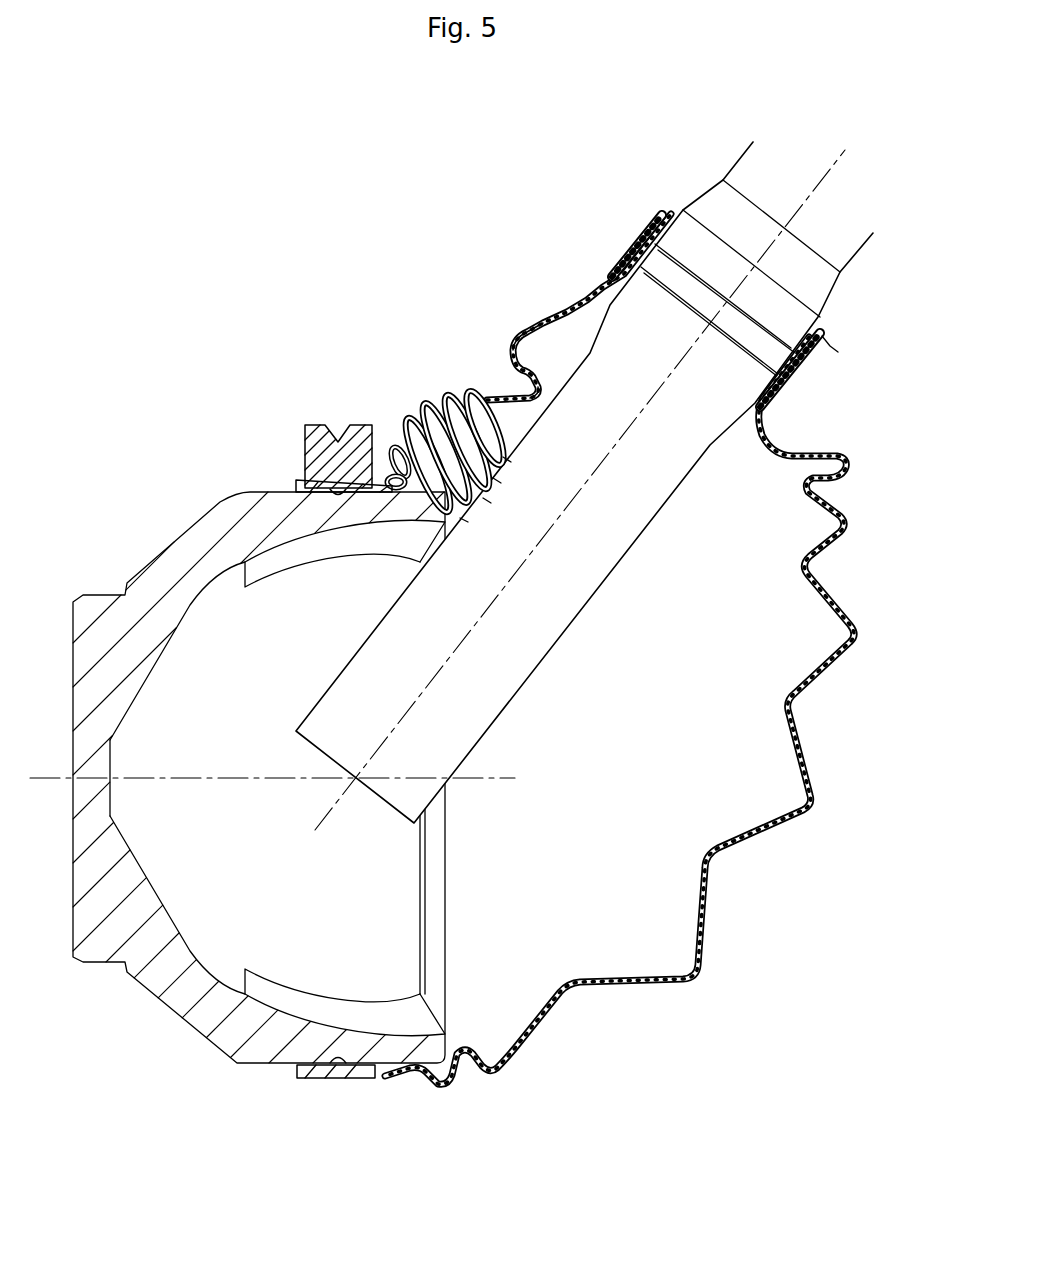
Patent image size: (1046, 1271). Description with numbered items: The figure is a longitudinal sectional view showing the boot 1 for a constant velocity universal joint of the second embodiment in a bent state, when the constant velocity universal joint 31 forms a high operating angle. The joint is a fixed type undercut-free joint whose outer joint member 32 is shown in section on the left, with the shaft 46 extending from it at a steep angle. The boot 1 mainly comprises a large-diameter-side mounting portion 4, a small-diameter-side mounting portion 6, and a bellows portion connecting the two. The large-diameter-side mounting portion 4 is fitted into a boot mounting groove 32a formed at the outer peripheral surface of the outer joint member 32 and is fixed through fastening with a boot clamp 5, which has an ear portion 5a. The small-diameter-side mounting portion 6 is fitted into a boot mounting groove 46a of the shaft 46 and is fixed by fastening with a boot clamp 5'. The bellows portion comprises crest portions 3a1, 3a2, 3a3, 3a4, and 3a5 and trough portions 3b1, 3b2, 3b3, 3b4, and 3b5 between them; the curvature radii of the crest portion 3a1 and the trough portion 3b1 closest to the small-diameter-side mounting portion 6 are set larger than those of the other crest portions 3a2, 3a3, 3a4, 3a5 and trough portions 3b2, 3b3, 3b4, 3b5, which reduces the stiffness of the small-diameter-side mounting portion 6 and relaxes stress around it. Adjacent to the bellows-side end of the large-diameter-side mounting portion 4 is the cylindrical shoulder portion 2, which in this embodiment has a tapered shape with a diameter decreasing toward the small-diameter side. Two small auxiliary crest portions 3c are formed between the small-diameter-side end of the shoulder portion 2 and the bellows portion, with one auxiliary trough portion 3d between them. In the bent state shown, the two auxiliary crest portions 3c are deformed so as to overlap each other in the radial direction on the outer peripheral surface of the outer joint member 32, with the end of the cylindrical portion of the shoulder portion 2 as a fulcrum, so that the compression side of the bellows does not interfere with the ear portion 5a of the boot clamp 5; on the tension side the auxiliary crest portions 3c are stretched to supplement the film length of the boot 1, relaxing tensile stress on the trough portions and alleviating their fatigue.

The boot for a constant velocity universal joint 1 is at (439, 266).
The cylindrical shoulder portion 2 is at (352, 522).
The crest portion 3a1 is at (515, 343).
The crest portion 3a2 is at (483, 392).
The crest portion 3a3 is at (456, 394).
The crest portion 3a4 is at (431, 400).
The crest portion 3a5 is at (404, 402).
The trough portion 3b1 is at (548, 394).
The trough portion 3b2 is at (512, 458).
The trough portion 3b3 is at (502, 476).
The trough portion 3b4 is at (491, 501).
The trough portion 3b5 is at (467, 521).
The auxiliary crest portion 3c is at (392, 445).
The auxiliary trough portion 3d is at (385, 557).
The large-diameter-side mounting portion 4 is at (338, 484).
The boot clamp 5 is at (333, 427).
The ear portion 5a is at (372, 470).
The boot clamp 5' is at (823, 370).
The small-diameter-side mounting portion 6 is at (634, 252).
The constant velocity universal joint 31 is at (266, 438).
The outer joint member 32 is at (235, 488).
The boot mounting groove 32a is at (333, 1060).
The shaft 46 is at (710, 184).
The boot mounting groove 46a is at (823, 375).